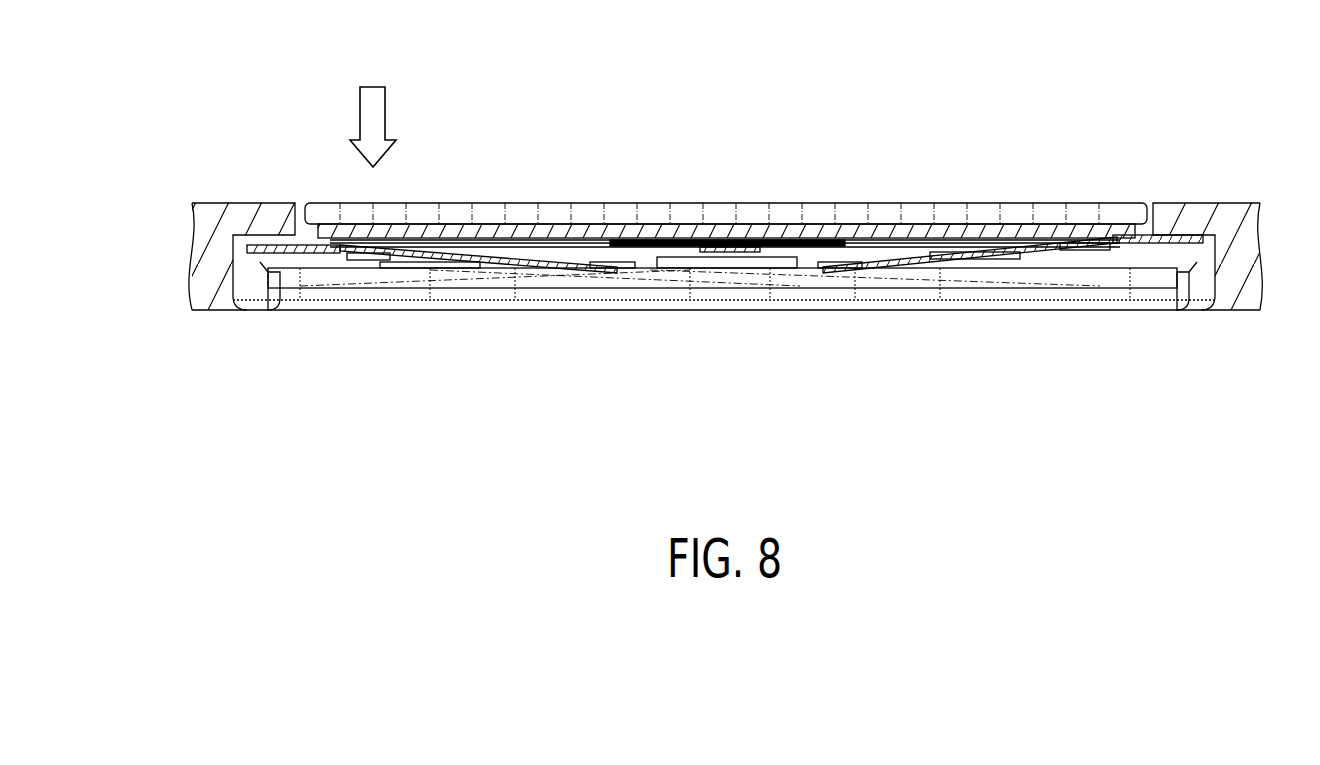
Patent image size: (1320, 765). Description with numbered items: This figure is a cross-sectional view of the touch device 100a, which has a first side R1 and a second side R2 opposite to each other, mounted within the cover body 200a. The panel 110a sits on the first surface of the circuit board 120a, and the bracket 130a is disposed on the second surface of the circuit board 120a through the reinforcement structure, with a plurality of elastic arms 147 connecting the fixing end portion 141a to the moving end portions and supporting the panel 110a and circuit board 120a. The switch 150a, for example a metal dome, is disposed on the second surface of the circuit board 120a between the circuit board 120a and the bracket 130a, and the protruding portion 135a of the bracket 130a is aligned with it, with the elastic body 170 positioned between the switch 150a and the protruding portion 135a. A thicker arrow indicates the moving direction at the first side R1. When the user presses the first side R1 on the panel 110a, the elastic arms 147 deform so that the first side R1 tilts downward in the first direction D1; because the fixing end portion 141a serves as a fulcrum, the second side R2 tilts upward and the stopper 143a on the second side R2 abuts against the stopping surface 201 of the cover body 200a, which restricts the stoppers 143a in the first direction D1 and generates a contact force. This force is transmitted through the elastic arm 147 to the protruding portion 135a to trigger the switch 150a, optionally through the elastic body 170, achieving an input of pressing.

The touch device 100a is at (1305, 429).
The panel 110a is at (625, 232).
The circuit board 120a is at (531, 230).
The bracket 130a is at (882, 275).
The protruding portion 135a is at (770, 272).
The fixing end portion 141a is at (612, 272).
The stopper 143a is at (282, 275).
The elastic arm 147 is at (515, 262).
The switch 150a is at (726, 243).
The elastic body 170 is at (688, 268).
The cover body 200a is at (1246, 203).
The stopping surface 201 is at (265, 234).
The first direction D1 is at (136, 40).
The first side R1 is at (328, 191).
The second side R2 is at (1127, 191).